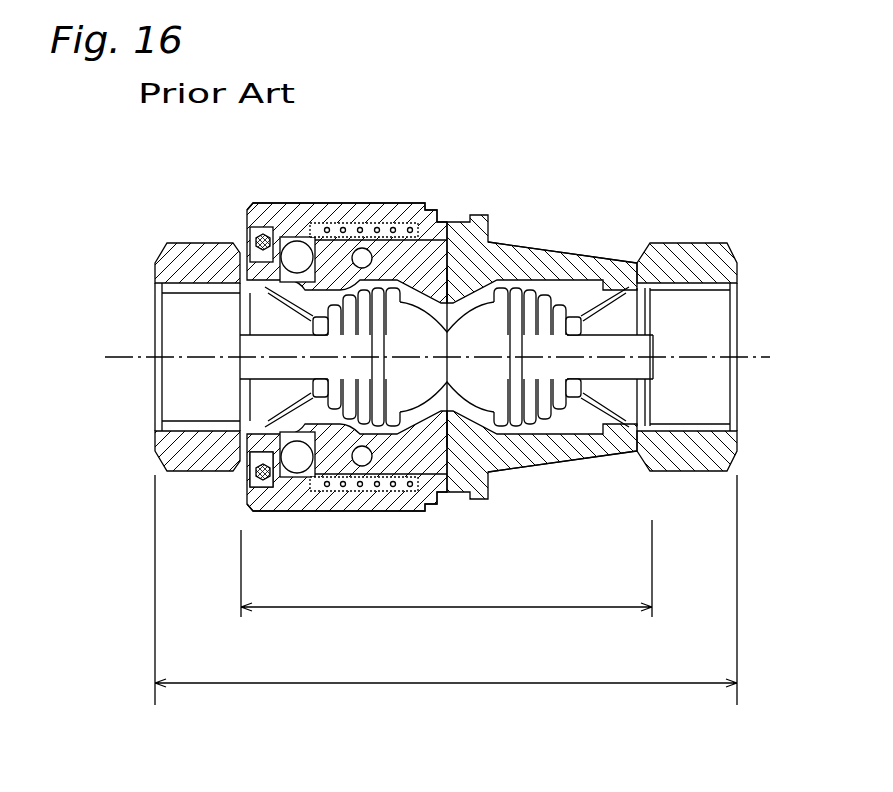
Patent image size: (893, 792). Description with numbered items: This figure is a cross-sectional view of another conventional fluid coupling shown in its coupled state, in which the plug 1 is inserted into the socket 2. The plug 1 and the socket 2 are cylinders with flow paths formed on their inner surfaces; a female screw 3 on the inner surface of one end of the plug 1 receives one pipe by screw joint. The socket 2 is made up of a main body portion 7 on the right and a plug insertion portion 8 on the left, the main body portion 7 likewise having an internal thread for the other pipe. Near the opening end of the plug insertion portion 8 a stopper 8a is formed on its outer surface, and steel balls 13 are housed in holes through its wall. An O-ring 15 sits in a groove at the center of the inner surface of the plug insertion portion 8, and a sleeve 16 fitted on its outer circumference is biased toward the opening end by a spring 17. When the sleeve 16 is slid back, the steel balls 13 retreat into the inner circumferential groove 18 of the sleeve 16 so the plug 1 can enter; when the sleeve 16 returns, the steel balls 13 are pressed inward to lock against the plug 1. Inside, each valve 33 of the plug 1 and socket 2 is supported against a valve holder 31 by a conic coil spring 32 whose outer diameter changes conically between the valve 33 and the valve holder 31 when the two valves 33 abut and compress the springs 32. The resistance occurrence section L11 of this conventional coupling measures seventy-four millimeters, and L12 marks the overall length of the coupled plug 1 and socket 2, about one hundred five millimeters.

The plug 1 is at (417, 345).
The socket 2 is at (542, 306).
The female screw 3 is at (160, 302).
The main body portion 7 is at (329, 203).
The plug insertion portion 8 is at (560, 143).
The stopper 8a is at (264, 478).
The steel balls 13 is at (297, 241).
The O-ring 15 is at (366, 205).
The sleeve 16 is at (256, 205).
The spring 17 is at (386, 204).
The inner circumferential groove 18 is at (252, 238).
The valve holder 31 is at (326, 418).
The conic coil spring 32 is at (333, 445).
The valve 33 is at (372, 445).
The resistance occurrence section L11 is at (446, 581).
The length L12 is at (446, 598).